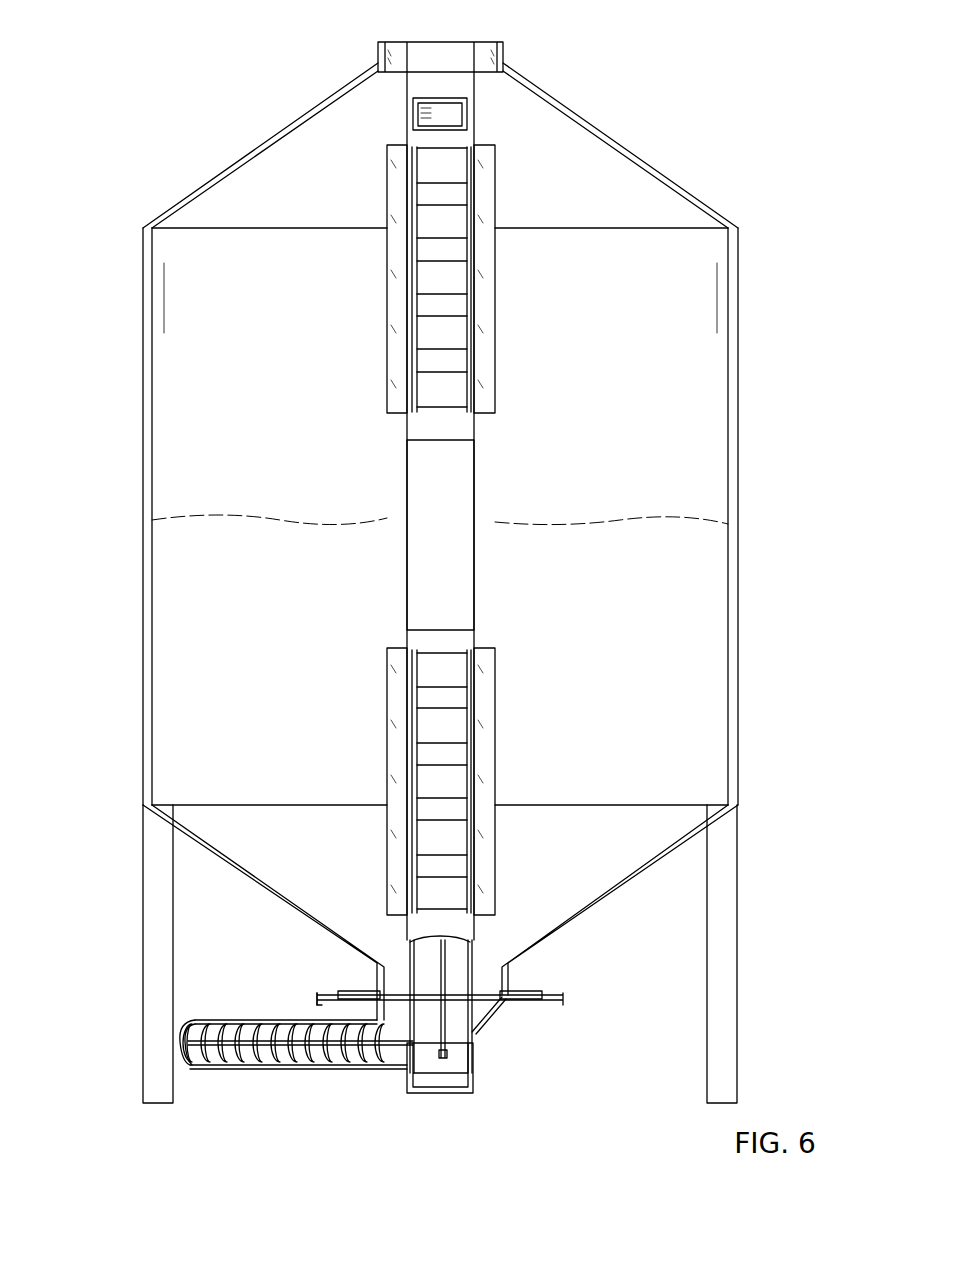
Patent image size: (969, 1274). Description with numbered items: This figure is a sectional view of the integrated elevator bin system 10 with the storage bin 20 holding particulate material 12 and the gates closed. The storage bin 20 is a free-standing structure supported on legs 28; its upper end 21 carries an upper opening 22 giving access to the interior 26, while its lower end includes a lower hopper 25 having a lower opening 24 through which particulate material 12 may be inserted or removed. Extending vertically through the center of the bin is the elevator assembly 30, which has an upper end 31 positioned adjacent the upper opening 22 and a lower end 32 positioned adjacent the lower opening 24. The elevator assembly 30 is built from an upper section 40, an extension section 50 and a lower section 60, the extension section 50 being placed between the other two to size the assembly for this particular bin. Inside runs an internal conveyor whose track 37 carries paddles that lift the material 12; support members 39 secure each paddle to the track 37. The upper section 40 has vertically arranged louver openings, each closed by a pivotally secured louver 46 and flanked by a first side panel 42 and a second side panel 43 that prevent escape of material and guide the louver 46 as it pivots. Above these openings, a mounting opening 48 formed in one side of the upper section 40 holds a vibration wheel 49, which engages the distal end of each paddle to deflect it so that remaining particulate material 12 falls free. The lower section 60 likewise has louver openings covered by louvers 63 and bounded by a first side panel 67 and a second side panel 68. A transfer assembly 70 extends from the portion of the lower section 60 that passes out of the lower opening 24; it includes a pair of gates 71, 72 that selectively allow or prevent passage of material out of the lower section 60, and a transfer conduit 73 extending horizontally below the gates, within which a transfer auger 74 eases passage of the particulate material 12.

The integrated elevator bin system 10 is at (717, 120).
The particulate material 12 is at (208, 517).
The storage bin 20 is at (740, 300).
The upper end 21 is at (377, 55).
The upper opening 22 is at (483, 53).
The lower opening 24 is at (427, 962).
The lower hopper 25 is at (640, 873).
The interior 26 is at (640, 425).
The legs 28 is at (158, 868).
The elevator assembly 30 is at (405, 463).
The upper end 31 is at (430, 47).
The lower end 32 is at (453, 1093).
The track 37 is at (443, 1027).
The support members 39 is at (443, 997).
The upper section 40 is at (387, 200).
The first side panel 42 is at (495, 198).
The second side panel 43 is at (387, 265).
The louver 46 is at (433, 335).
The mounting opening 48 is at (467, 127).
The vibration wheel 49 is at (438, 110).
The extension section 50 is at (477, 488).
The lower section 60 is at (495, 765).
The louver 63 is at (447, 673).
The first side panel 67 is at (497, 870).
The second side panel 68 is at (387, 705).
The transfer assembly 70 is at (207, 1020).
The gate 71 is at (313, 997).
The gate 72 is at (563, 997).
The transfer conduit 73 is at (317, 1067).
The transfer auger 74 is at (247, 1048).